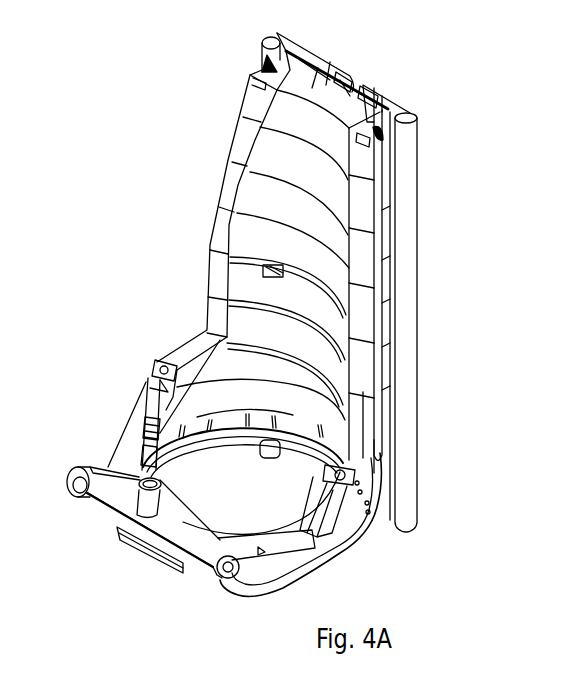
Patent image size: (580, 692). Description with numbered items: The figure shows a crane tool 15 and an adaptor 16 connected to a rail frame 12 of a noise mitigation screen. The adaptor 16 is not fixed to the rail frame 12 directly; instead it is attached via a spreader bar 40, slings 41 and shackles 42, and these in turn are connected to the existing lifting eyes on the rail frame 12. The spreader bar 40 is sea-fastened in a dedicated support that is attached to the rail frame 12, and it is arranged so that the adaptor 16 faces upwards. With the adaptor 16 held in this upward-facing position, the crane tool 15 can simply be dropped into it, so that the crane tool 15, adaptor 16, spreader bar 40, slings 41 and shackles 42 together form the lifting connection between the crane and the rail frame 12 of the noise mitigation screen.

The rail frame 12 is at (453, 72).
The crane tool 15 is at (146, 428).
The adaptor 16 is at (147, 497).
The spreader bar 40 is at (122, 500).
The slings 41 is at (70, 500).
The shackles 42 is at (153, 362).